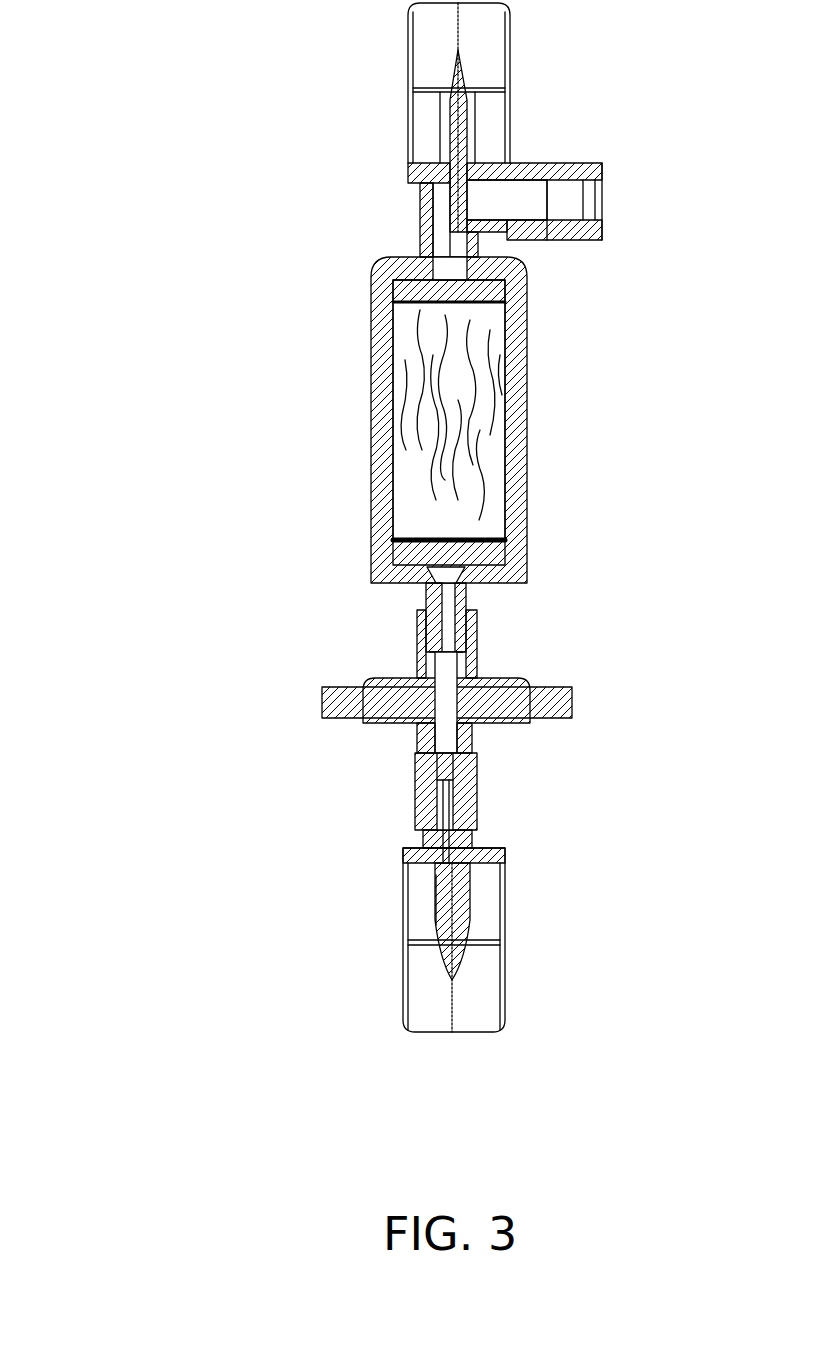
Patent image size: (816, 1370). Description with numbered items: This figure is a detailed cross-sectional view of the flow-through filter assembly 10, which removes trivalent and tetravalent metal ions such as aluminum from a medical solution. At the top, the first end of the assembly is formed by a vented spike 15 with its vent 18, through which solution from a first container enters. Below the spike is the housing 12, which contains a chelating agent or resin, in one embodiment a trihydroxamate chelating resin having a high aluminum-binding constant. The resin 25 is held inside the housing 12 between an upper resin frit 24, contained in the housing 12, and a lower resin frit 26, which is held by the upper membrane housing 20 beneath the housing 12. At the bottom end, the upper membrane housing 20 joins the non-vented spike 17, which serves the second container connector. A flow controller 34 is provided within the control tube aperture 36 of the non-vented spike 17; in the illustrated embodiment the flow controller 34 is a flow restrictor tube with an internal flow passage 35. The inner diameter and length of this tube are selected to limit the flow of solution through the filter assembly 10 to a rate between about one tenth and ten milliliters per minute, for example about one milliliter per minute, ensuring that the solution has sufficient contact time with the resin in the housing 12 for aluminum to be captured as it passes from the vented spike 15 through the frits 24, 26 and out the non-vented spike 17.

The flow-through filter assembly 10 is at (175, 210).
The housing 12 is at (373, 386).
The vented spike 15 is at (458, 107).
The non-vented spike 17 is at (460, 914).
The vent 18 is at (567, 198).
The upper membrane housing 20 is at (488, 680).
The upper resin frit 24 is at (472, 308).
The filter material 25 is at (470, 430).
The lower resin frit 26 is at (410, 540).
The flow controller 34 is at (452, 828).
The internal flow passage 35 is at (455, 775).
The control tube aperture 36 is at (443, 873).